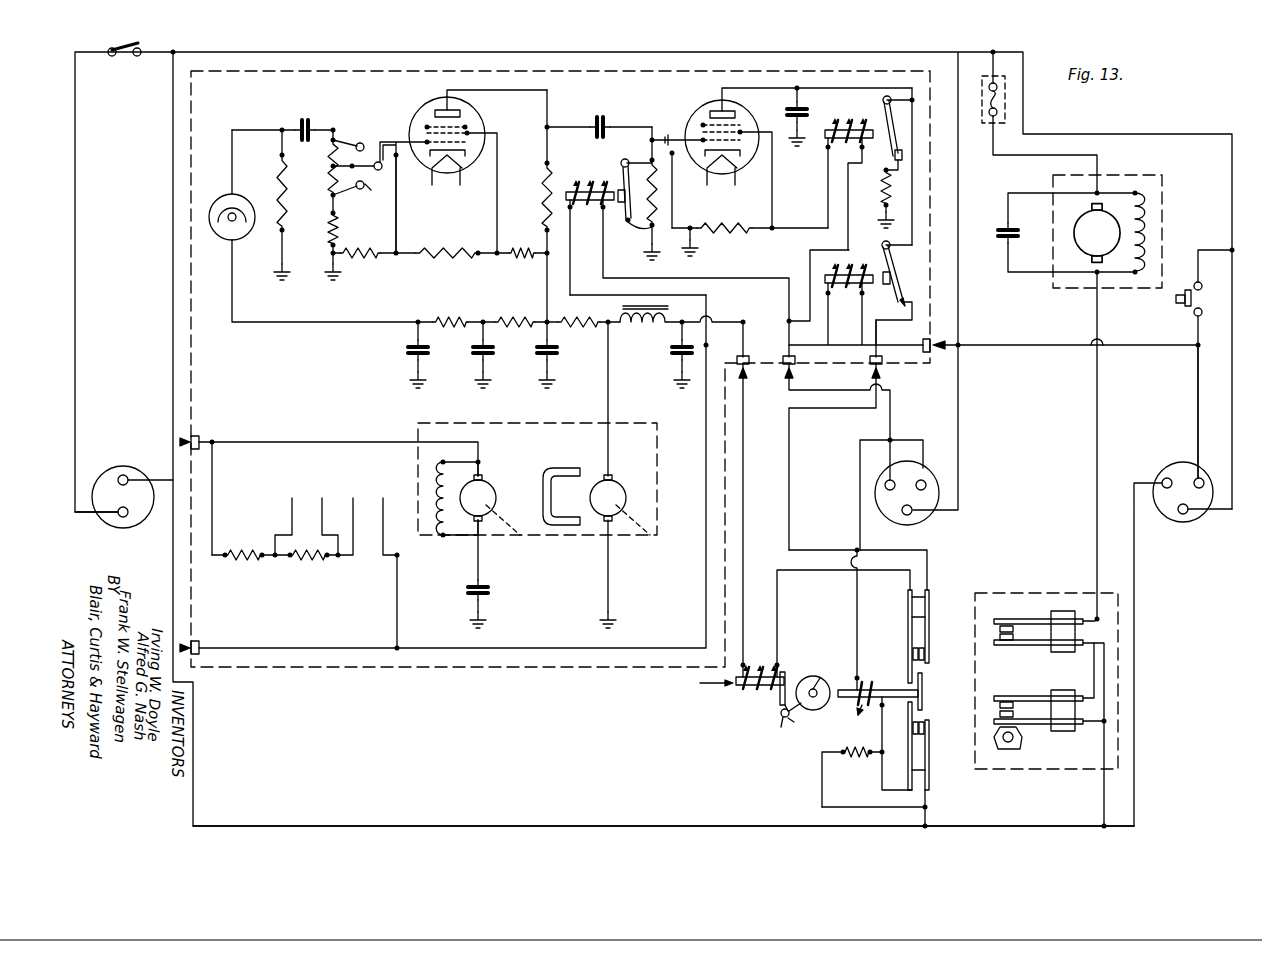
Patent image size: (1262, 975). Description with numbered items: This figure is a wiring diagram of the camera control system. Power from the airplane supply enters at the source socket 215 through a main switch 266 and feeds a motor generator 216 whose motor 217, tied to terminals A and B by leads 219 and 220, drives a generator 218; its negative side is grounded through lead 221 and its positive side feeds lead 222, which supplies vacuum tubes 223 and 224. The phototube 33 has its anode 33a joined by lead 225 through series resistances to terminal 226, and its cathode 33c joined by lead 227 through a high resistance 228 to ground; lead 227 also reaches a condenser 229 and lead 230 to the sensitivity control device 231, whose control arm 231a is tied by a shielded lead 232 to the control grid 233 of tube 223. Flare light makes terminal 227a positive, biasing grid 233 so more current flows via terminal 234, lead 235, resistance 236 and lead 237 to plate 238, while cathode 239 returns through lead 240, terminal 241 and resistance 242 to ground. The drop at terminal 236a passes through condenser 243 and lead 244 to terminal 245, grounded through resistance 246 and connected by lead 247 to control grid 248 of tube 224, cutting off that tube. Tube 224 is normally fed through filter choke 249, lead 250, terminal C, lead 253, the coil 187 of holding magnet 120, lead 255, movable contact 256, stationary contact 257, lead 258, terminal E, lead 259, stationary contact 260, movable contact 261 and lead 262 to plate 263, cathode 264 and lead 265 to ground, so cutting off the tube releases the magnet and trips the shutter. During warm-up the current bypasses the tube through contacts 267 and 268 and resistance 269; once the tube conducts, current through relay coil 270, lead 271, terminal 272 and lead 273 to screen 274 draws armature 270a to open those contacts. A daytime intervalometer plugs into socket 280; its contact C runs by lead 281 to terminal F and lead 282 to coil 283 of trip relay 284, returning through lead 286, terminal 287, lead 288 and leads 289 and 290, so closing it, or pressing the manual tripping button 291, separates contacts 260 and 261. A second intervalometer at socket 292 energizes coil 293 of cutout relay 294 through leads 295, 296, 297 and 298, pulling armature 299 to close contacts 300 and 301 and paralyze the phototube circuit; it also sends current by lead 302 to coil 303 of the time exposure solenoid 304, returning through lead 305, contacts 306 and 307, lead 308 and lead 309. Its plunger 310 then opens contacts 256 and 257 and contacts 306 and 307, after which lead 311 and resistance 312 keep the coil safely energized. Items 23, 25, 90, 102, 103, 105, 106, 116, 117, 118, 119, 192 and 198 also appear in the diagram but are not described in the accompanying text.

The motor unit 23 is at (1070, 294).
The contact switch assembly 25 is at (1037, 580).
The photoelectric tube 33 is at (230, 197).
The anode 33a is at (236, 222).
The cathode 33c is at (242, 207).
The cam 90 is at (1004, 748).
The contact spring 102 is at (1006, 619).
The contact spring 103 is at (1005, 645).
The contact spring 105 is at (1010, 724).
The contact spring 106 is at (1006, 698).
The cam 116 is at (820, 680).
The cam follower 117 is at (792, 690).
The pivot 118 is at (785, 718).
The arm 119 is at (783, 668).
The holding magnet 120 is at (699, 691).
The coil of holding magnet 187 is at (752, 690).
The lever 192 is at (783, 728).
The link 198 is at (778, 710).
The socket 215 is at (118, 525).
The motor generator 216 is at (425, 425).
The motor 217 is at (490, 490).
The generator 218 is at (616, 490).
The lead 219 is at (360, 442).
The lead 220 is at (470, 570).
The lead 221 is at (585, 528).
The lead 222 is at (606, 403).
The vacuum tube 223 is at (472, 163).
The vacuum tube 224 is at (791, 150).
The lead 225 is at (268, 322).
The terminal 226 is at (604, 324).
The lead 227 is at (248, 130).
The terminal 227a is at (282, 130).
The high resistance 228 is at (286, 220).
The condenser 229 is at (305, 118).
The lead 230 is at (335, 132).
The sensitivity control device 231 is at (345, 120).
The control arm 231a is at (372, 188).
The shielded lead 232 is at (380, 138).
The control grid 233 is at (462, 158).
The terminal 234 is at (534, 324).
The lead 235 is at (546, 296).
The resistance 236 is at (545, 196).
The terminal 236a is at (546, 127).
The lead 237 is at (543, 95).
The plate 238 is at (462, 112).
The cathode 239 is at (415, 170).
The lead 240 is at (397, 220).
The terminal 241 is at (400, 260).
The resistance 242 is at (360, 258).
The condenser 243 is at (600, 116).
The lead 244 is at (625, 125).
The terminal 245 is at (660, 132).
The resistance 246 is at (652, 180).
The lead 247 is at (690, 170).
The control grid 248 is at (765, 148).
The filter choke 249 is at (660, 327).
The lead 250 is at (825, 252).
The lead 253 is at (740, 478).
The lead 255 is at (777, 612).
The movable contact 256 is at (908, 625).
The stationary contact 257 is at (929, 650).
The lead 258 is at (789, 503).
The lead 259 is at (880, 322).
The stationary contact 260 is at (904, 302).
The movable contact 261 is at (890, 290).
The lead 262 is at (920, 262).
The tube plate 263 is at (735, 108).
The tube cathode 264 is at (740, 160).
The lead 265 is at (672, 208).
The main switch 266 is at (126, 58).
The contact 267 is at (886, 156).
The contact 268 is at (899, 149).
The resistance 269 is at (884, 185).
The relay coil 270 is at (848, 130).
The armature 270a is at (882, 118).
The lead 271 is at (828, 165).
The terminal 272 is at (772, 230).
The lead 273 is at (775, 200).
The screen 274 is at (787, 110).
The three pole socket 280 is at (1168, 522).
The lead 281 is at (1198, 400).
The lead 282 is at (858, 312).
The coil of trip relay 283 is at (838, 295).
The trip relay 284 is at (862, 268).
The lead 286 is at (828, 312).
The terminal 287 is at (708, 345).
The lead 288 is at (706, 400).
The lead 289 is at (75, 322).
The lead 290 is at (505, 45).
The manual tripping button 291 is at (1185, 304).
The three pole socket 292 is at (924, 518).
The coil of cutout relay 293 is at (583, 220).
The cutout relay 294 is at (578, 178).
The lead 295 is at (586, 300).
The lead 296 is at (710, 280).
The lead 297 is at (890, 410).
The lead 298 is at (958, 420).
The relay armature 299 is at (613, 204).
The contact 300 is at (633, 238).
The contact 301 is at (628, 224).
The lead 302 is at (858, 472).
The coil 303 is at (872, 686).
The time exposure solenoid 304 is at (862, 712).
The lead 305 is at (878, 740).
The contact 306 is at (920, 726).
The contact 307 is at (930, 730).
The lead 308 is at (926, 800).
The lead 309 is at (608, 826).
The plunger 310 is at (897, 700).
The lead 311 is at (822, 798).
The resistance 312 is at (860, 758).